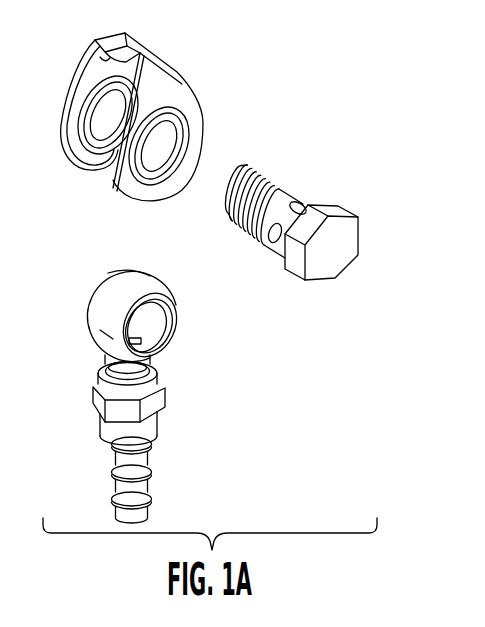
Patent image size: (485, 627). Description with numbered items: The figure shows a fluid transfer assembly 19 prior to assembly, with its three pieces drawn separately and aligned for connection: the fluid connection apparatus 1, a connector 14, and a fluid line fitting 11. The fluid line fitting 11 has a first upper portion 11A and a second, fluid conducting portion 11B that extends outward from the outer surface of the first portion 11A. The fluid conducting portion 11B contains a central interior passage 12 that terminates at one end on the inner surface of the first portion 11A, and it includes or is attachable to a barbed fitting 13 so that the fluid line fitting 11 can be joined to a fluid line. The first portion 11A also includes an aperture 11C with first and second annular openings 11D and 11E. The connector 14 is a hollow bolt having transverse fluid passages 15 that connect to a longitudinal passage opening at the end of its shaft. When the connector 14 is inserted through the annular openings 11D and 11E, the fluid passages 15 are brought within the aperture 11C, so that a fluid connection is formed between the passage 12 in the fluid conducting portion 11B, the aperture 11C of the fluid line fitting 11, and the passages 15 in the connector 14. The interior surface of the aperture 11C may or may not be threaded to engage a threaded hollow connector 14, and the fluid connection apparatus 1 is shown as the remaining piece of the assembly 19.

The fluid connection apparatus 1 is at (190, 77).
The fluid transfer assembly 19 is at (262, 77).
The connector 14 is at (357, 270).
The fluid passages 15 is at (274, 222).
The fluid line fitting 11 is at (85, 298).
The first portion 11A is at (168, 290).
The fluid conducting portion 11B is at (105, 359).
The aperture 11C is at (164, 320).
The first annular opening 11D is at (171, 302).
The second annular opening 11E is at (112, 278).
The central interior passage 12 is at (136, 340).
The barbed fitting 13 is at (152, 457).